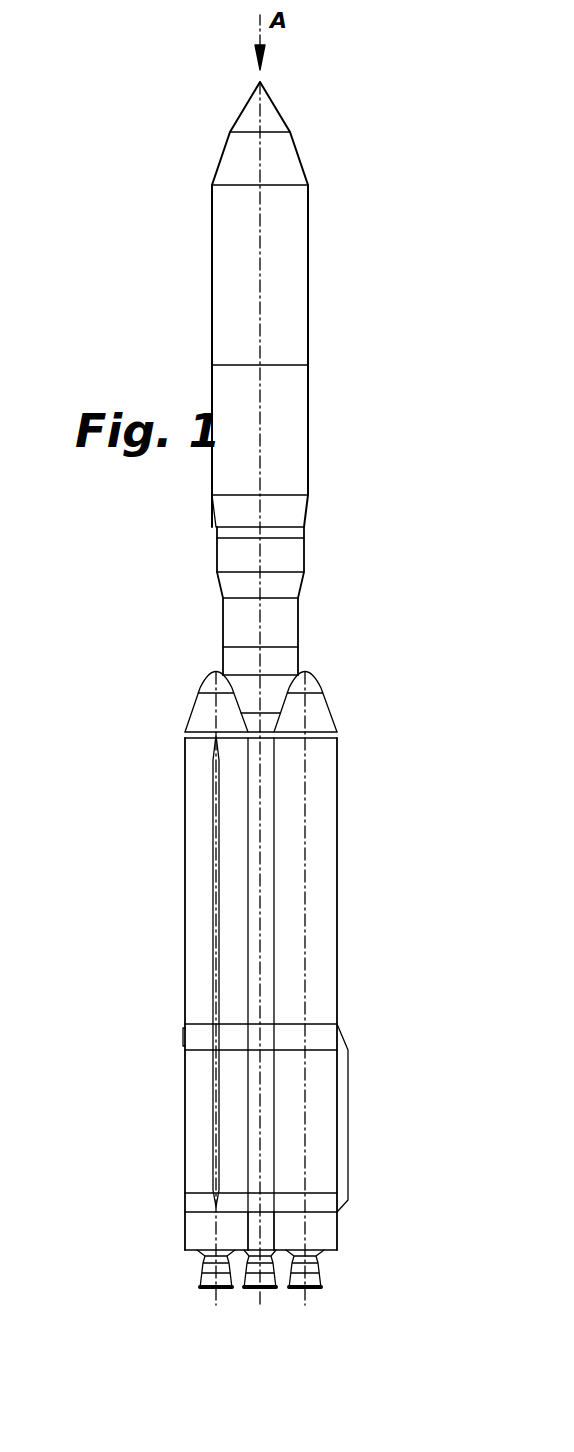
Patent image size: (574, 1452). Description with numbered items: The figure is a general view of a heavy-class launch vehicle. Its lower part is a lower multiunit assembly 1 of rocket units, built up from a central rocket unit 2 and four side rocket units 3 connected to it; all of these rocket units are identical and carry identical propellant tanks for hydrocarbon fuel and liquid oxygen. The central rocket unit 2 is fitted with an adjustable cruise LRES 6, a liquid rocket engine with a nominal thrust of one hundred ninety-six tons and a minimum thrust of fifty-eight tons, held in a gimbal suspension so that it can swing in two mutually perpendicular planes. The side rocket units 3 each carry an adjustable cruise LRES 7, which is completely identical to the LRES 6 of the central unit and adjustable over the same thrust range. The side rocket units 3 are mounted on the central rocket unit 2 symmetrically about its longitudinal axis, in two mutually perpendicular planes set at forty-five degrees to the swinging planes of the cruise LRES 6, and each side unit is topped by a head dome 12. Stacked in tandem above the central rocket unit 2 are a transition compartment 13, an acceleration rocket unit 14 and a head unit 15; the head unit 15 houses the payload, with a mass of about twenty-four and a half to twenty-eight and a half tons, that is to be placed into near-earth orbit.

The lower multiunit assembly 1 is at (338, 975).
The central rocket unit 2 is at (272, 1232).
The side rocket units 3 is at (203, 843).
The adjustable cruise LRES 6 is at (258, 1283).
The adjustable cruise LRESs 7 is at (208, 1288).
The head domes 12 is at (315, 713).
The transition compartment 13 is at (270, 693).
The acceleration rocket unit 14 is at (283, 620).
The head unit 15 is at (285, 312).